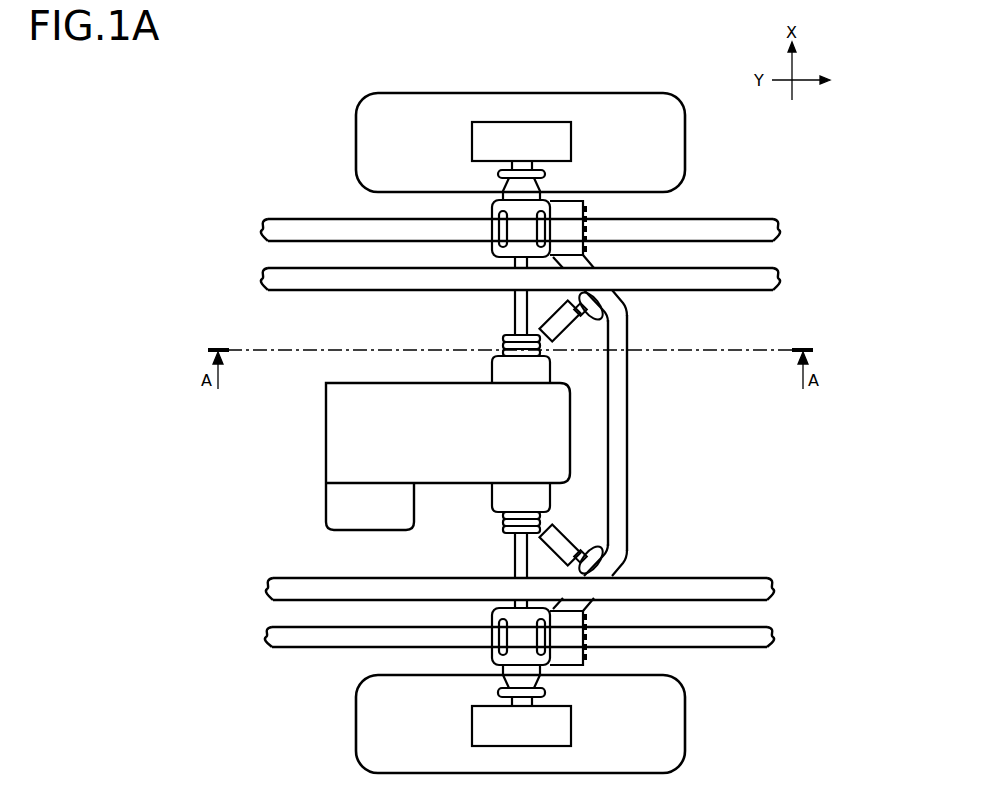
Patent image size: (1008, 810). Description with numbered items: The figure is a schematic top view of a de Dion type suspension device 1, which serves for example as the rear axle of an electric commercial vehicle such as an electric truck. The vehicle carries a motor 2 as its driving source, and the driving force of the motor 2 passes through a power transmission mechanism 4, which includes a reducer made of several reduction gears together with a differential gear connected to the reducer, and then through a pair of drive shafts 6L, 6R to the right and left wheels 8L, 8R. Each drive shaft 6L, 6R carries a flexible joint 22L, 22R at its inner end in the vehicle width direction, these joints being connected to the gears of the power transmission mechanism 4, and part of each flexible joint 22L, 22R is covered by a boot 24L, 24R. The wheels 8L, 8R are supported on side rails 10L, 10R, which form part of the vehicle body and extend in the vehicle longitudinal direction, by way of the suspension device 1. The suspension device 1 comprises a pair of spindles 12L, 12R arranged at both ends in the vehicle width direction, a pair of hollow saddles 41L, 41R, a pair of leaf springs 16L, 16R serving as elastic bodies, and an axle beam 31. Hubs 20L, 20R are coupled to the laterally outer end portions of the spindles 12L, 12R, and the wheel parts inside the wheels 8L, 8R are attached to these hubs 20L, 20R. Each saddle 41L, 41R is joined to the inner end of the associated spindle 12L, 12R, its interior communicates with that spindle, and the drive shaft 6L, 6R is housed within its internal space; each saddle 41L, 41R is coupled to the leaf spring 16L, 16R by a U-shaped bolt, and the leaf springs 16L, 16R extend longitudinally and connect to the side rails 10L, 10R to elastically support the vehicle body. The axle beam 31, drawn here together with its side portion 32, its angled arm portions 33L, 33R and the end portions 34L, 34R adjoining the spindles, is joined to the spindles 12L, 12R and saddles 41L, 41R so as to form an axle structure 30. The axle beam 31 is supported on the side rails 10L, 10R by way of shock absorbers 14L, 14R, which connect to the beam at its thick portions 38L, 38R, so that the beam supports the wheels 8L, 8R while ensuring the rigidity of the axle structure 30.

The suspension device 1 is at (826, 298).
The motor 2 is at (326, 505).
The power transmission mechanism 4 is at (326, 418).
The drive shaft 6L is at (514, 312).
The drive shaft 6R is at (514, 550).
The wheel 8L is at (356, 110).
The wheel 8R is at (356, 714).
The side rail 10L is at (262, 277).
The side rail 10R is at (268, 582).
The spindle 12L is at (494, 201).
The spindle 12R is at (494, 673).
The shock absorber 14L is at (600, 322).
The shock absorber 14R is at (600, 542).
The leaf spring 16L is at (288, 220).
The leaf spring 16R is at (286, 648).
The hub 20L is at (558, 122).
The hub 20R is at (558, 746).
The flexible joint 22L is at (492, 374).
The flexible joint 22R is at (492, 494).
The boot 24L is at (503, 340).
The boot 24R is at (503, 524).
The axle structure 30 is at (744, 456).
The axle beam 31 is at (633, 488).
The side frame 32 is at (630, 462).
The left frame arm 33L is at (612, 302).
The right frame arm 33R is at (606, 576).
The left bracket 34L is at (568, 208).
The right bracket 34R is at (568, 654).
The thick portion 38L is at (606, 300).
The thick portion 38R is at (606, 566).
The saddle 41L is at (497, 247).
The saddle 41R is at (497, 622).